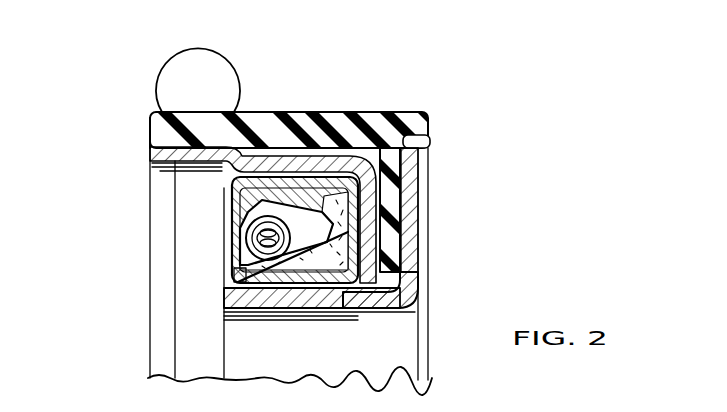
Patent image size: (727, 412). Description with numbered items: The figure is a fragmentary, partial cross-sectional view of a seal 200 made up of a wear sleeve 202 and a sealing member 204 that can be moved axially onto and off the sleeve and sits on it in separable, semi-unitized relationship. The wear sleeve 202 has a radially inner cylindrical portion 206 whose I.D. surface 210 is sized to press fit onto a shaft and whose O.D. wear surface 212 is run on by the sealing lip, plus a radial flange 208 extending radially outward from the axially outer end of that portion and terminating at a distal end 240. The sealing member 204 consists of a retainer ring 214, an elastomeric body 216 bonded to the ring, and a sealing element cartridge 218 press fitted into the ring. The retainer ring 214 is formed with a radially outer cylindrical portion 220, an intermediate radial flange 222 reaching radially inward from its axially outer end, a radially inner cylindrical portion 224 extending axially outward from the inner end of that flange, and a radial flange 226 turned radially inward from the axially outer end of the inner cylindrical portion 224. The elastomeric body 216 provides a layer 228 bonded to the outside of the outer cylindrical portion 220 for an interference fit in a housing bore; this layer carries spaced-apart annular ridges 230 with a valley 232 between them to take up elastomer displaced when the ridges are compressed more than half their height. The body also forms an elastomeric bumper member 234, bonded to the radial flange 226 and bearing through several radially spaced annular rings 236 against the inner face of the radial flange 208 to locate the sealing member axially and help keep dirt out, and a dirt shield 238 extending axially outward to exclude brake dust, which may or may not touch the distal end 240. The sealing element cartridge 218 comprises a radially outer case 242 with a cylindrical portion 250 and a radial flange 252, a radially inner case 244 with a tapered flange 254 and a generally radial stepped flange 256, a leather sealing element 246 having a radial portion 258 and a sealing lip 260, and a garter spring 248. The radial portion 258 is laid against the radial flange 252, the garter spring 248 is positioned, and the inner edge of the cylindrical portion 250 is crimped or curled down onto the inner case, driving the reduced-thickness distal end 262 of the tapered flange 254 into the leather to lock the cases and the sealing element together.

The seal 200 is at (457, 122).
The wear sleeve 202 is at (515, 225).
The sealing member 204 is at (384, 104).
The radially inner cylindrical portion 206 is at (338, 295).
The radial flange 208 is at (413, 212).
The I.D. surface 210 is at (288, 318).
The O.D. wear surface 212 is at (230, 284).
The retainer ring 214 is at (205, 168).
The elastomeric body 216 is at (148, 128).
The sealing element cartridge 218 is at (248, 240).
The radially outer cylindrical portion 220 is at (168, 152).
The intermediate radial flange 222 is at (230, 183).
The radially inner cylindrical portion 224 is at (287, 177).
The radial flange 226 is at (325, 292).
The layer 228 is at (150, 113).
The annular ridges 230 is at (198, 78).
The valley 232 is at (200, 112).
The elastomeric bumper member 234 is at (403, 246).
The annular rings 236 is at (405, 184).
The dirt shield 238 is at (420, 116).
The distal end 240 is at (432, 141).
The radially outer case 242 is at (230, 192).
The radially inner case 244 is at (230, 266).
The leather sealing element 246 is at (275, 300).
The garter spring 248 is at (232, 264).
The cylindrical portion 250 is at (330, 160).
The radial flange 252 is at (410, 305).
The tapered flange 254 is at (305, 156).
The generally radial stepped flange 256 is at (232, 241).
The radial portion 258 is at (340, 196).
The sealing lip 260 is at (186, 262).
The distal end 262 is at (272, 308).